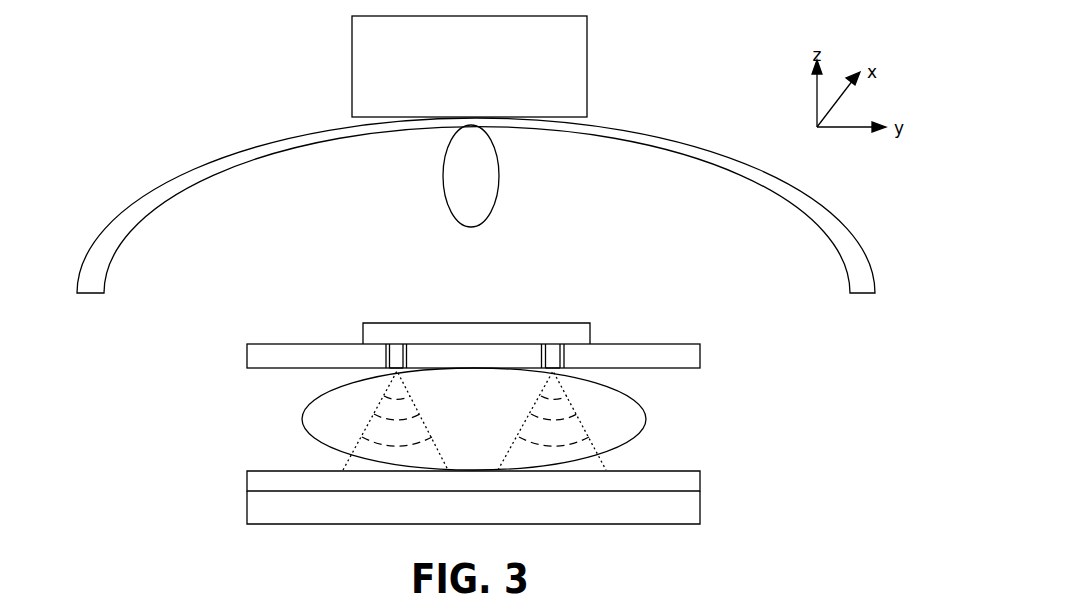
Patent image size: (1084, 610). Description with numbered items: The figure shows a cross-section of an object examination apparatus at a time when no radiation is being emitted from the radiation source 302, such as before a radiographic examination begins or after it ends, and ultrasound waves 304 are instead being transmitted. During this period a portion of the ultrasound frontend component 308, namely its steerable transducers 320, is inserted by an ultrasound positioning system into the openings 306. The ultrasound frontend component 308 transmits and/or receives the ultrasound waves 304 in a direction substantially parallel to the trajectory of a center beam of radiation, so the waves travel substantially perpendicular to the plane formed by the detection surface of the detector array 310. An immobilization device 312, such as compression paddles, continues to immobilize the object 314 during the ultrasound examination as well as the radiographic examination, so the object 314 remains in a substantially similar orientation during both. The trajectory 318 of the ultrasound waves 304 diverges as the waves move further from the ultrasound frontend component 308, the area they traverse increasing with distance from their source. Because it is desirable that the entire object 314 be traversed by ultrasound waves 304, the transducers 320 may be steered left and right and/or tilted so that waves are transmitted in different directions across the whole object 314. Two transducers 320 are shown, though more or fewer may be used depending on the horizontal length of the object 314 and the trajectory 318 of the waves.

The radiation source 302 is at (499, 183).
The ultrasound waves 304 is at (395, 397).
The openings 306 is at (385, 350).
The ultrasound frontend component 308 is at (403, 322).
The detector array 310 is at (245, 505).
The immobilization device 312 is at (245, 353).
The object 314 is at (363, 380).
The trajectory of the ultrasound waves 318 is at (355, 448).
The steerable transducers 320 is at (407, 346).